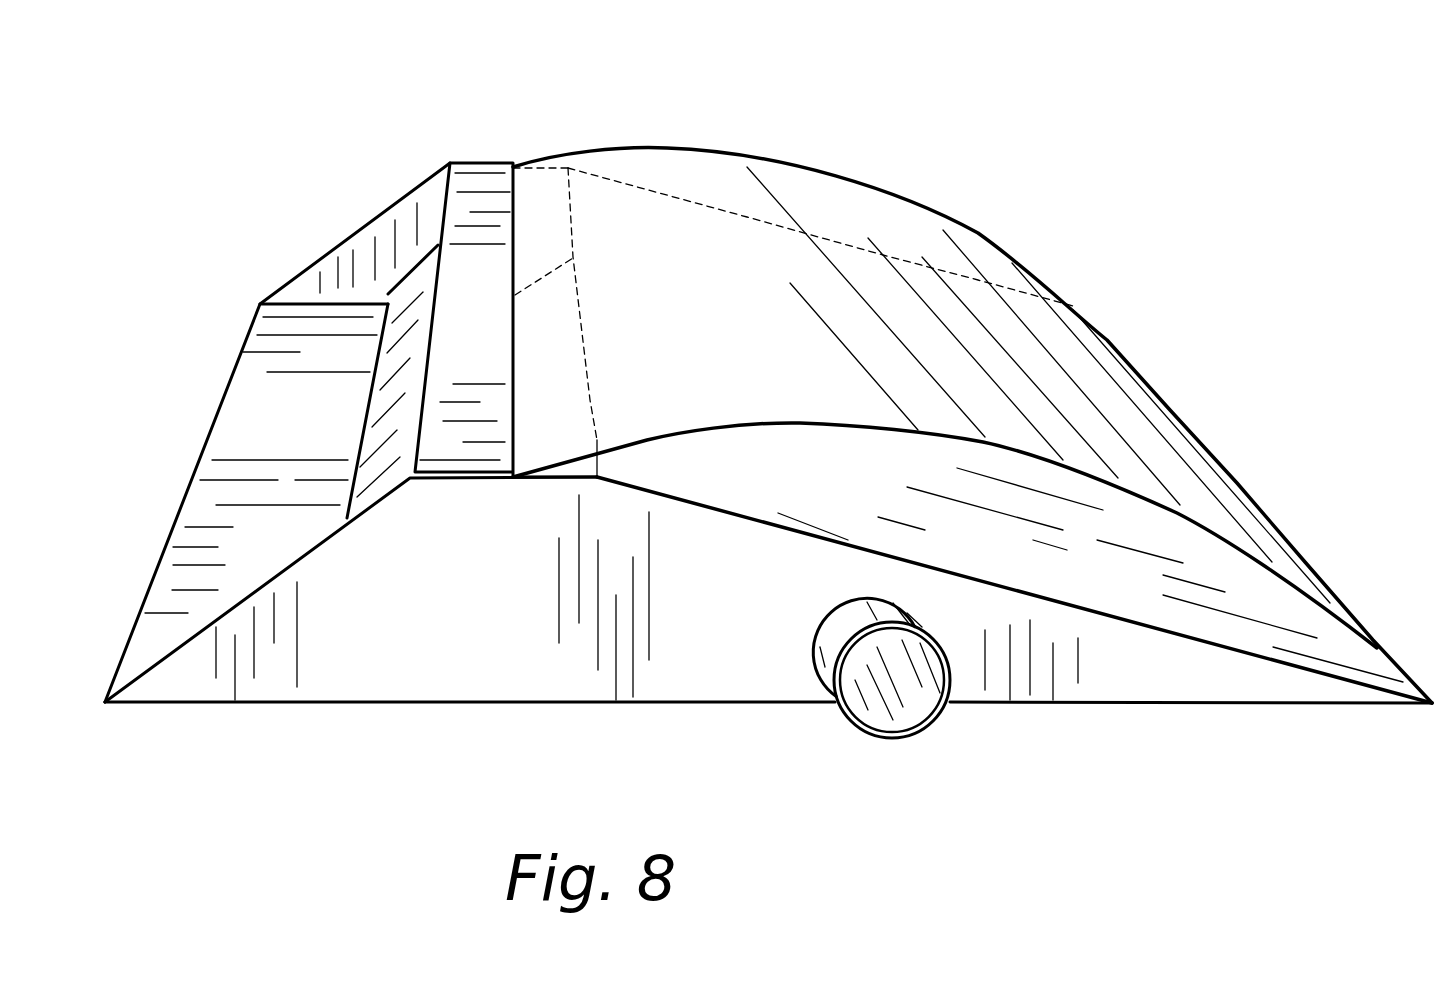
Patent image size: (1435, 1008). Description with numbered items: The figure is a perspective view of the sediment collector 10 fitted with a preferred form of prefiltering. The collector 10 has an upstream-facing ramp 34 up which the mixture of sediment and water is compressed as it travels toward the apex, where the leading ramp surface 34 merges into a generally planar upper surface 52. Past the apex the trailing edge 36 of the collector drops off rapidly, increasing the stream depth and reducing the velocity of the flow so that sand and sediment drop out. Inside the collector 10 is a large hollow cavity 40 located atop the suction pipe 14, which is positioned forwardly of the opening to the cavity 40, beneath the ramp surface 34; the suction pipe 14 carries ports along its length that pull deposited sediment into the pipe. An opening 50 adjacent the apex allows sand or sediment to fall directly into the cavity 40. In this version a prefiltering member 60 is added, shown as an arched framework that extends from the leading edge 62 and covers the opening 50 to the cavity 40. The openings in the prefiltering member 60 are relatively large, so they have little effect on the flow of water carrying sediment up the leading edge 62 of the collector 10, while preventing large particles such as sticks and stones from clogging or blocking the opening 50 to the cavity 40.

The collector 10 is at (1060, 180).
The suction pipe 14 is at (868, 733).
The ramp 34 is at (1063, 575).
The trailing edge 36 is at (358, 237).
The cavity 40 is at (582, 463).
The opening 50 is at (563, 478).
The upper surface 52 is at (475, 183).
The prefiltering member 60 is at (705, 273).
The leading edge 62 is at (1237, 483).